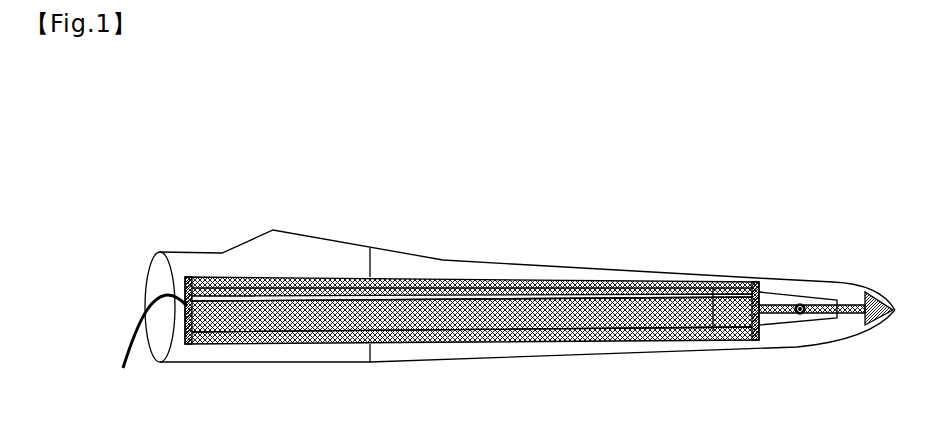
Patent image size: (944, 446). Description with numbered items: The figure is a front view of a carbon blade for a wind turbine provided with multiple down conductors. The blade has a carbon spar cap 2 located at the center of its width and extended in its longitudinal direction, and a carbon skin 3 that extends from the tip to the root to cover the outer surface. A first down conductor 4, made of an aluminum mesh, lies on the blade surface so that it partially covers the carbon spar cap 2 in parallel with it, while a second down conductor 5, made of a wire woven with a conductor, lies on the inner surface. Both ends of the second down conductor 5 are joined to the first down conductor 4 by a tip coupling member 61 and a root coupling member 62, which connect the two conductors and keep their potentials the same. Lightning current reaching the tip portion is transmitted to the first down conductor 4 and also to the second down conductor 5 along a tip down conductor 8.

The carbon spar cap 2 is at (777, 300).
The carbon skin 3 is at (401, 262).
The first down conductor 4 is at (303, 340).
The second down conductor 5 is at (612, 305).
The tip down conductor 8 is at (845, 313).
The tip coupling member 61 is at (772, 323).
The root coupling member 62 is at (185, 345).